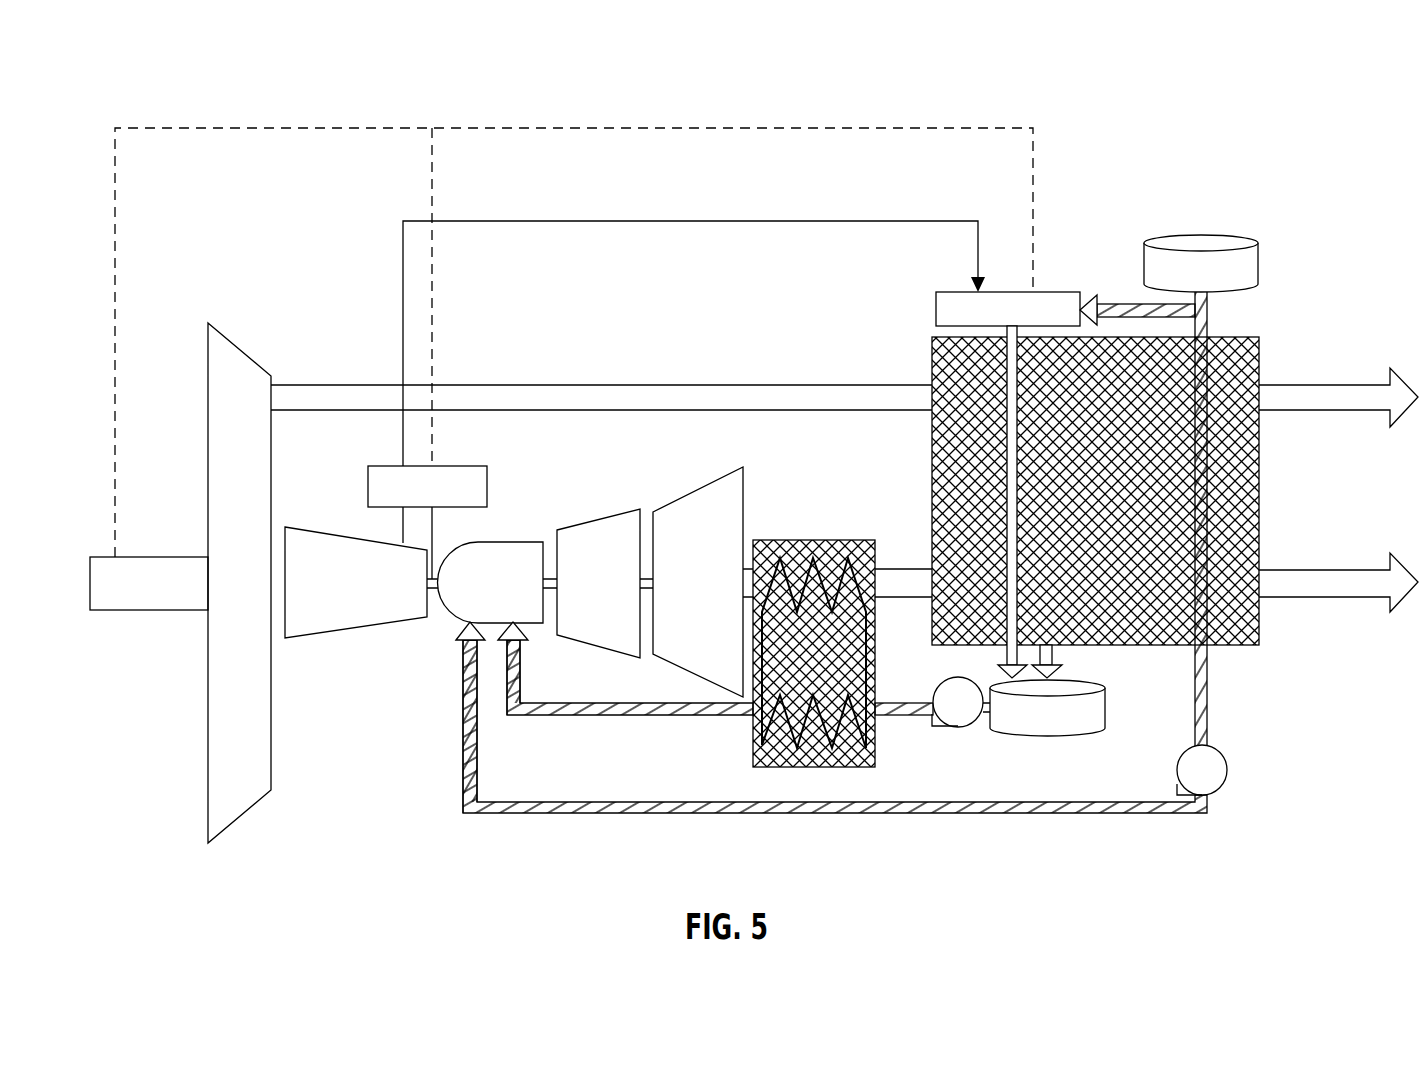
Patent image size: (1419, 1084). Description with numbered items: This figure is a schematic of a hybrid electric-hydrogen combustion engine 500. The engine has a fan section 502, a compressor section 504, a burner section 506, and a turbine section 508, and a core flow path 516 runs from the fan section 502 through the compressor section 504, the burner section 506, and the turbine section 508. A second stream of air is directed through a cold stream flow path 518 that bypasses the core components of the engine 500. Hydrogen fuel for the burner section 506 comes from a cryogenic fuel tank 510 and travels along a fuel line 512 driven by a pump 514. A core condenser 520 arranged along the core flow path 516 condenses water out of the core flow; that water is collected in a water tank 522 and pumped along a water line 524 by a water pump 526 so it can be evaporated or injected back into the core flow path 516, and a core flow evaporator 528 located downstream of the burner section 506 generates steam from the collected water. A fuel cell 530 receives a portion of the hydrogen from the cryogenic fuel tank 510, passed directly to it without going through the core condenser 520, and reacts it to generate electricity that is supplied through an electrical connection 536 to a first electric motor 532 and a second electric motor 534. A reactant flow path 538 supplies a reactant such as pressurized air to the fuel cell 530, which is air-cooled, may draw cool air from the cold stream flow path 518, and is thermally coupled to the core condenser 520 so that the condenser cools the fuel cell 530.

The hybrid electric-hydrogen combustion engine 500 is at (166, 106).
The fan section 502 is at (237, 845).
The compressor section 504 is at (318, 650).
The burner section 506 is at (436, 634).
The turbine section 508 is at (606, 662).
The cryogenic fuel tank 510 is at (1172, 243).
The fuel line 512 is at (873, 808).
The pump 514 is at (1210, 788).
The core flow path 516 is at (923, 590).
The cold stream flow path 518 is at (808, 385).
The core condenser 520 is at (1240, 512).
The water tank 522 is at (1035, 725).
The water line 524 is at (557, 716).
The water pump 526 is at (952, 715).
The core flow evaporator 528 is at (822, 540).
The fuel cell 530 is at (1052, 290).
The first electric motor 532 is at (122, 612).
The second electric motor 534 is at (445, 483).
The electrical connection 536 is at (812, 127).
The reactant flow path 538 is at (642, 220).